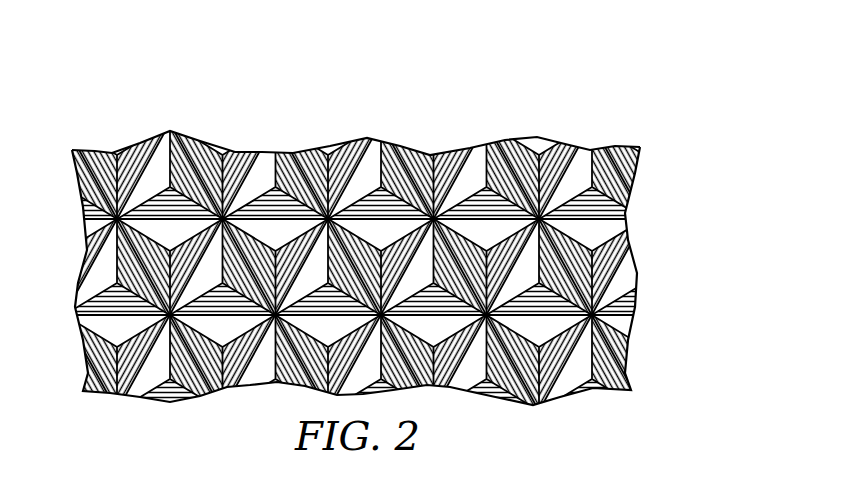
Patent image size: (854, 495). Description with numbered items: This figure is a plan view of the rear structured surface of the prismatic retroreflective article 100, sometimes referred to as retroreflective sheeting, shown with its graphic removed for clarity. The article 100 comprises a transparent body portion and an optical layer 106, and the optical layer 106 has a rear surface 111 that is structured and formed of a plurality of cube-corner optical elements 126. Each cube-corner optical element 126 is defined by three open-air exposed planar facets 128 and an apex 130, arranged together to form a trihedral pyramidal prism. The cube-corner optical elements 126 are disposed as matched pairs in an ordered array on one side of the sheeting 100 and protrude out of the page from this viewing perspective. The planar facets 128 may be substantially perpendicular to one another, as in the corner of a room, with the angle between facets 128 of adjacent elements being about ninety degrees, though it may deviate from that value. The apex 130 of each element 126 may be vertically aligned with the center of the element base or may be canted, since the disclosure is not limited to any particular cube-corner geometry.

The retroreflective article 100 is at (584, 75).
The optical layer 106 is at (662, 194).
The rear surface 111 is at (113, 140).
The cube-corner optical elements 126 is at (367, 215).
The planar facets 128 is at (240, 150).
The apex 130 is at (540, 158).